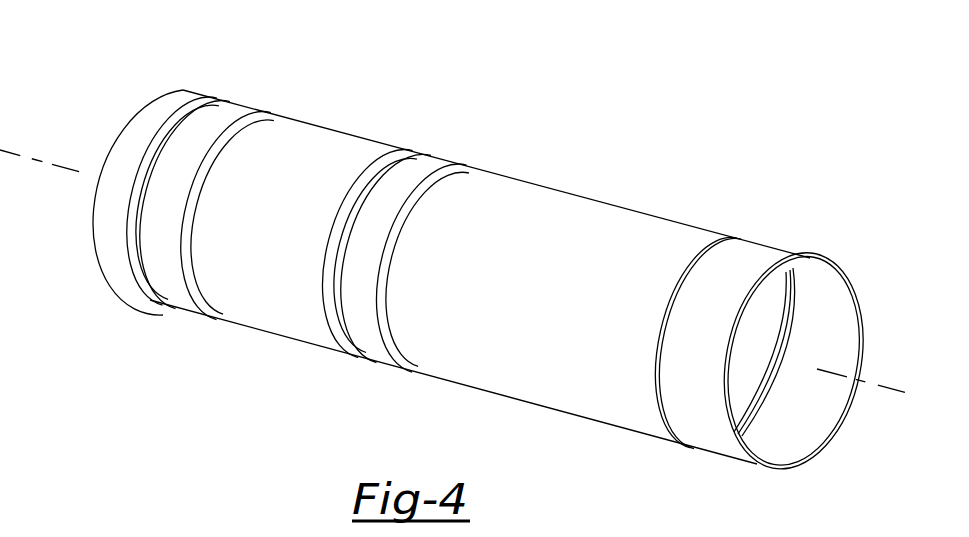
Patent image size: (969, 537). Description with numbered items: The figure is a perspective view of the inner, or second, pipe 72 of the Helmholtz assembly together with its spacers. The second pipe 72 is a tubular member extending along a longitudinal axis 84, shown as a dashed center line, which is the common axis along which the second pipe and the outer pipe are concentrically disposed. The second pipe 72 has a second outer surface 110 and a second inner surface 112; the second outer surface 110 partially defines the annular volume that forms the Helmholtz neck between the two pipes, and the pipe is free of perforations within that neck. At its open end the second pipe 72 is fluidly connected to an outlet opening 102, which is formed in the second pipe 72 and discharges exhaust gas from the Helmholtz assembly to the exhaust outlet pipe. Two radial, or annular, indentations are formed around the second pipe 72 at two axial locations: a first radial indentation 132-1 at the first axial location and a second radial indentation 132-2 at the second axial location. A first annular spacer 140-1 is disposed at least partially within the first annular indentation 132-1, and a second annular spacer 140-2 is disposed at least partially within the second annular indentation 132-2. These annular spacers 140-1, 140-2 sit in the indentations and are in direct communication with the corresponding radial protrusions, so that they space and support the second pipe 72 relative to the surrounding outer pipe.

The second pipe 72 is at (108, 70).
The longitudinal axis 84 is at (25, 157).
The outlet opening 102 is at (800, 402).
The second outer surface 110 is at (550, 214).
The second inner surface 112 is at (768, 458).
The first radial indentation 132-1 is at (183, 113).
The second radial indentation 132-2 is at (366, 182).
The first annular spacer 140-1 is at (165, 270).
The second annular spacer 140-2 is at (358, 327).